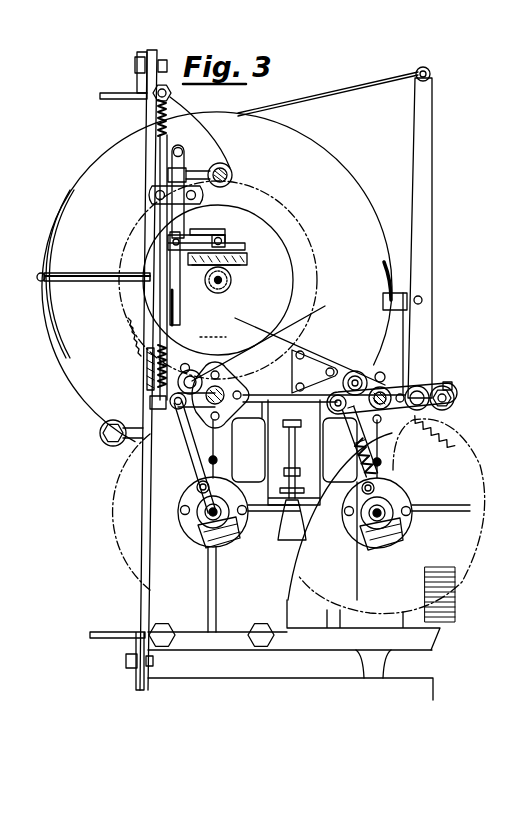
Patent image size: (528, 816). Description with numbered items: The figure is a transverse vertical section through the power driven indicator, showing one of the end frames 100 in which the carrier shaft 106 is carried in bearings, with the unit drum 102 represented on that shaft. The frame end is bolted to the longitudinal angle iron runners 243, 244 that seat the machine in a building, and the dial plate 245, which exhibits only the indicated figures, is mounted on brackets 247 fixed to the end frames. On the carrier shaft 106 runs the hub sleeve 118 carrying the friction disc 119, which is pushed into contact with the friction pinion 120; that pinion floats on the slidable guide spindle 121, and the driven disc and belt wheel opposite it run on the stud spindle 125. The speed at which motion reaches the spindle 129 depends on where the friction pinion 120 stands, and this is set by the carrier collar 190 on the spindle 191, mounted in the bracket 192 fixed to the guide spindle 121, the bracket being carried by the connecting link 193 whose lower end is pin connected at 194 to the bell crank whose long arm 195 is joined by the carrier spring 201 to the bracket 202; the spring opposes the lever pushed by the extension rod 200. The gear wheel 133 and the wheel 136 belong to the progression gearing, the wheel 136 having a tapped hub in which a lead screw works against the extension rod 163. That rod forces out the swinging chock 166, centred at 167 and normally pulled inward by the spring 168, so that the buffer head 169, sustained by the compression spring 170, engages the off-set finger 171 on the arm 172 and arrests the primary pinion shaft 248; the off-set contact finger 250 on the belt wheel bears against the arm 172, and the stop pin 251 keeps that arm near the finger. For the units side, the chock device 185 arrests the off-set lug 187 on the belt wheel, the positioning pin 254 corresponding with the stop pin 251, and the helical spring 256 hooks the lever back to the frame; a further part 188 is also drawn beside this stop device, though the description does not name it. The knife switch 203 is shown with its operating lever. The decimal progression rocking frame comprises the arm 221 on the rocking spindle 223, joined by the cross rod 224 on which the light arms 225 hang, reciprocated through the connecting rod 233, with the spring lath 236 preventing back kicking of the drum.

The end frame 100 is at (208, 581).
The unit drum 102 is at (335, 163).
The carrier shaft 106 is at (219, 285).
The hub sleeve 118 is at (232, 281).
The friction disc 119 is at (250, 252).
The friction pinion 120 is at (248, 259).
The slidable guide spindle 121 is at (181, 303).
The stud spindle 125 is at (228, 166).
The spindle 129 is at (224, 400).
The gear wheel 133 is at (121, 565).
The wheel 136 is at (470, 540).
The extension rod 163 is at (405, 503).
The swinging chock 166 is at (375, 487).
The chock centre 167 is at (403, 532).
The spring 168 is at (381, 462).
The buffer head 169 is at (456, 443).
The compression spring 170 is at (378, 440).
The off-set finger 171 is at (340, 394).
The arm 172 is at (381, 376).
The chock device 185 is at (158, 418).
The off-set lug 187 is at (218, 328).
The rod 188 is at (187, 457).
The carrier collar 190 is at (228, 237).
The spindle 191 is at (222, 240).
The bracket 192 is at (165, 242).
The connecting link 193 is at (160, 292).
The pin connection 194 is at (150, 403).
The bell crank arm 195 is at (147, 370).
The extension rod 200 is at (205, 525).
The carrier spring 201 is at (156, 117).
The bracket 202 is at (172, 95).
The knife switch 203 is at (302, 470).
The rocking frame arm 221 is at (418, 109).
The rocking spindle 223 is at (418, 397).
The cross rod 224 is at (415, 73).
The light arm 225 is at (312, 96).
The connecting rod 233 is at (391, 300).
The spring lath 236 is at (405, 291).
The angle iron runner 243 is at (118, 96).
The angle iron runner 244 is at (108, 631).
The dial plate 245 is at (72, 188).
The bracket 247 is at (82, 273).
The primary pinion shaft 248 is at (382, 397).
The off-set contact finger 250 is at (356, 371).
The stop pin 251 is at (452, 400).
The positioning pin 254 is at (222, 446).
The helical spring 256 is at (197, 487).